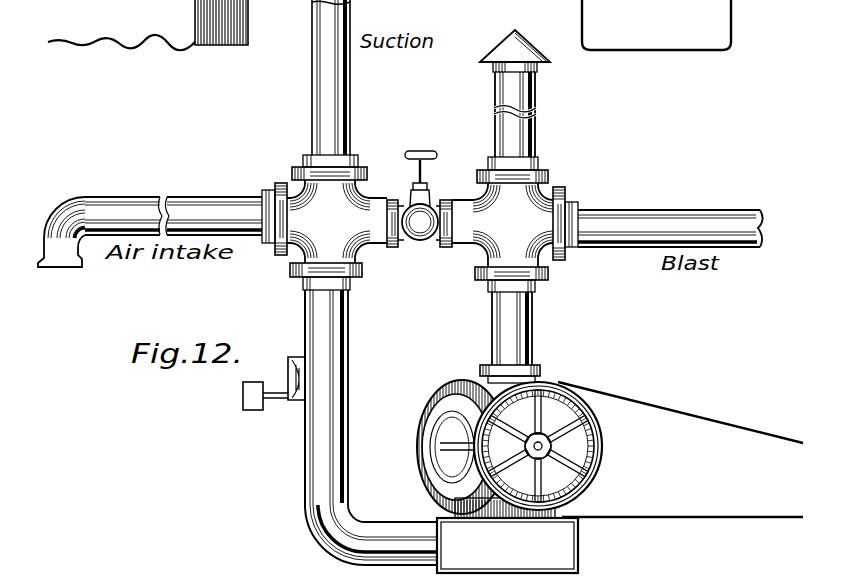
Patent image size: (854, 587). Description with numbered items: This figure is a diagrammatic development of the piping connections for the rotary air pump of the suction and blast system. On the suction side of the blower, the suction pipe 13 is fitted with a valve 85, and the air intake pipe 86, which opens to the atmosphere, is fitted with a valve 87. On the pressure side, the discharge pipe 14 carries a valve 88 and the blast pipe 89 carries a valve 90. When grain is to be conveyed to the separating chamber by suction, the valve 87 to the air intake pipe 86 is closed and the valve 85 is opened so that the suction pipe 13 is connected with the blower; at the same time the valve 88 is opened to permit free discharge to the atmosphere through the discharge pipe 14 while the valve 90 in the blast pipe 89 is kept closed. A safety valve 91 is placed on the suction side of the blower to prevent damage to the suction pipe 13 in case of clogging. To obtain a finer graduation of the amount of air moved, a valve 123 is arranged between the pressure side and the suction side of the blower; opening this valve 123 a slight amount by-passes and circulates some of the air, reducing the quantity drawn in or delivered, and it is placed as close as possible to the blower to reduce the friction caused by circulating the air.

The suction pipe 13 is at (330, 103).
The discharge pipe 14 is at (525, 93).
The valve 85 is at (305, 170).
The air intake pipe 86 is at (186, 205).
The valve 87 is at (276, 240).
The valve 88 is at (549, 175).
The blast pipe 89 is at (668, 216).
The valve 90 is at (564, 256).
The safety valve 91 is at (300, 392).
The valve 123 is at (420, 228).